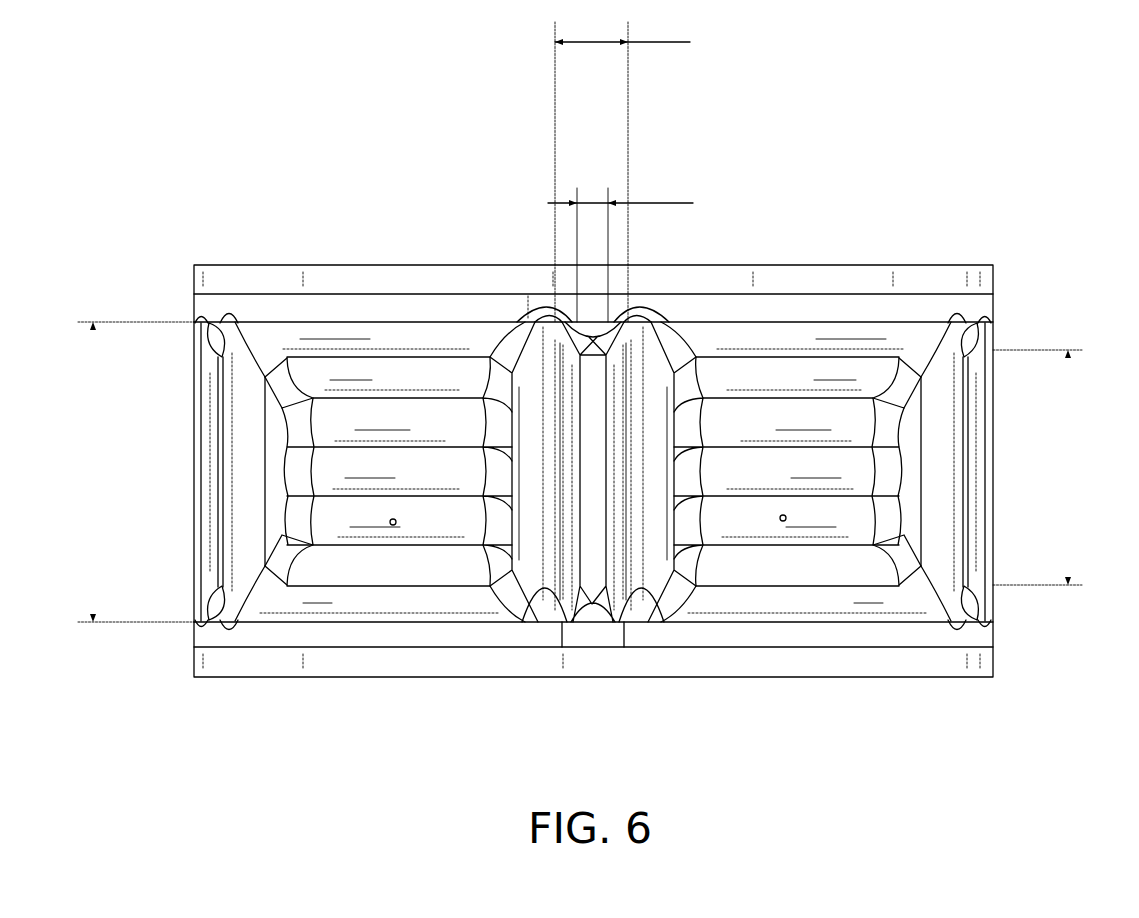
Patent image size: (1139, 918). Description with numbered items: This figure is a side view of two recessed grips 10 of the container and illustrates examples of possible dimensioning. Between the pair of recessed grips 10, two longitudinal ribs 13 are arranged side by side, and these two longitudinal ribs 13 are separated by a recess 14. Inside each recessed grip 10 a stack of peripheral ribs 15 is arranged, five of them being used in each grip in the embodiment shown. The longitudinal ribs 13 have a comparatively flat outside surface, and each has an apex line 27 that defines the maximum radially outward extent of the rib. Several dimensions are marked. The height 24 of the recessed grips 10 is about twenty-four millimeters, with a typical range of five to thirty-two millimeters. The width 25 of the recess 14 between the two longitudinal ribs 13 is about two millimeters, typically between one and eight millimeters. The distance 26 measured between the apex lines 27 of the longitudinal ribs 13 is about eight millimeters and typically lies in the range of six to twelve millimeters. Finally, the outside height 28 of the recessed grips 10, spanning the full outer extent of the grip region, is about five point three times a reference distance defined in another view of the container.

The recessed grip 10 is at (393, 525).
The longitudinal rib 13 is at (205, 557).
The recess 14 is at (595, 547).
The peripheral rib 15 is at (343, 422).
The height 24 is at (1075, 458).
The width 25 is at (658, 203).
The distance 26 is at (655, 42).
The apex line 27 is at (555, 397).
The outside height 28 is at (125, 622).